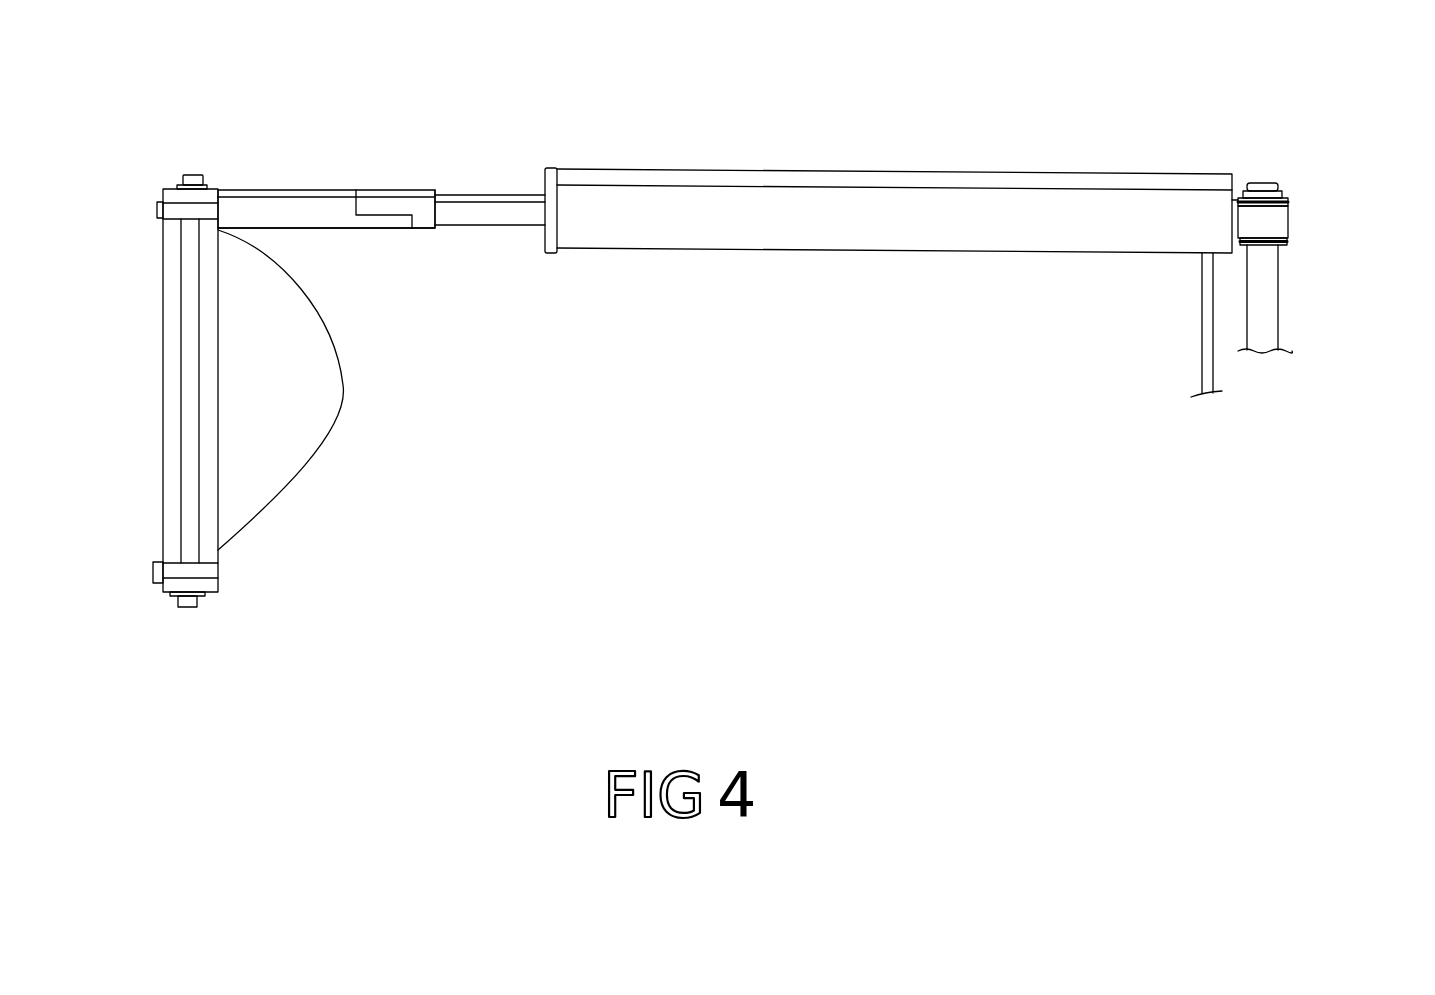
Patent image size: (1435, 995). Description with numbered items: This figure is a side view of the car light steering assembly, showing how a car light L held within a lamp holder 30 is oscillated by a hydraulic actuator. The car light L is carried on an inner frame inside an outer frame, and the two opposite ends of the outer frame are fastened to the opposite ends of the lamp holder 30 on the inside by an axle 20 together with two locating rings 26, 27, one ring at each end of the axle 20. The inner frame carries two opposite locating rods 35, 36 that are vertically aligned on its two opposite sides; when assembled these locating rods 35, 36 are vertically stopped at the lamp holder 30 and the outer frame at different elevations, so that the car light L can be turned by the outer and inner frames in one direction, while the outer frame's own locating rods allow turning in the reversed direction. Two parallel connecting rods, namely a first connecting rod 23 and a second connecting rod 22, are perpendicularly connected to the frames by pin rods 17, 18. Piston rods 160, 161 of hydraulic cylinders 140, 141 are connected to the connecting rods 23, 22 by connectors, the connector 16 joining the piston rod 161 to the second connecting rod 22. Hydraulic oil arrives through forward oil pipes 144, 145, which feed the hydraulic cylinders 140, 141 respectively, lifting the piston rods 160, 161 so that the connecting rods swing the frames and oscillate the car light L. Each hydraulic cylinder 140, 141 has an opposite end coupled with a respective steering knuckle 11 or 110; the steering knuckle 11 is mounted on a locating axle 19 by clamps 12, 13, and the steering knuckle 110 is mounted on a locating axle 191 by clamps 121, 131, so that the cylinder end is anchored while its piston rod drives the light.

The steering knuckle 11 is at (1280, 227).
The steering knuckle 110 is at (1288, 198).
The clamp 12 is at (1339, 200).
The clamp 121 is at (1290, 205).
The clamp 13 is at (427, 222).
The clamp 131 is at (1282, 243).
The connector 16 is at (398, 190).
The pin rod 17 is at (220, 140).
The pin rod 18 is at (195, 176).
The locating axle 19 is at (1336, 309).
The locating axle 191 is at (1270, 327).
The axle 20 is at (192, 516).
The second connecting rod 22 is at (280, 190).
The first connecting rod 23 is at (340, 223).
The locating ring 26 is at (180, 184).
The locating ring 27 is at (203, 597).
The lamp holder 30 is at (210, 585).
The locating rod 35 is at (157, 208).
The locating rod 36 is at (153, 572).
The hydraulic cylinder 140 is at (823, 238).
The hydraulic cylinder 141 is at (790, 178).
The forward oil pipe 144 is at (1207, 330).
The forward oil pipe 145 is at (1138, 325).
The piston rod 160 is at (510, 215).
The piston rod 161 is at (488, 196).
The car light L is at (310, 427).